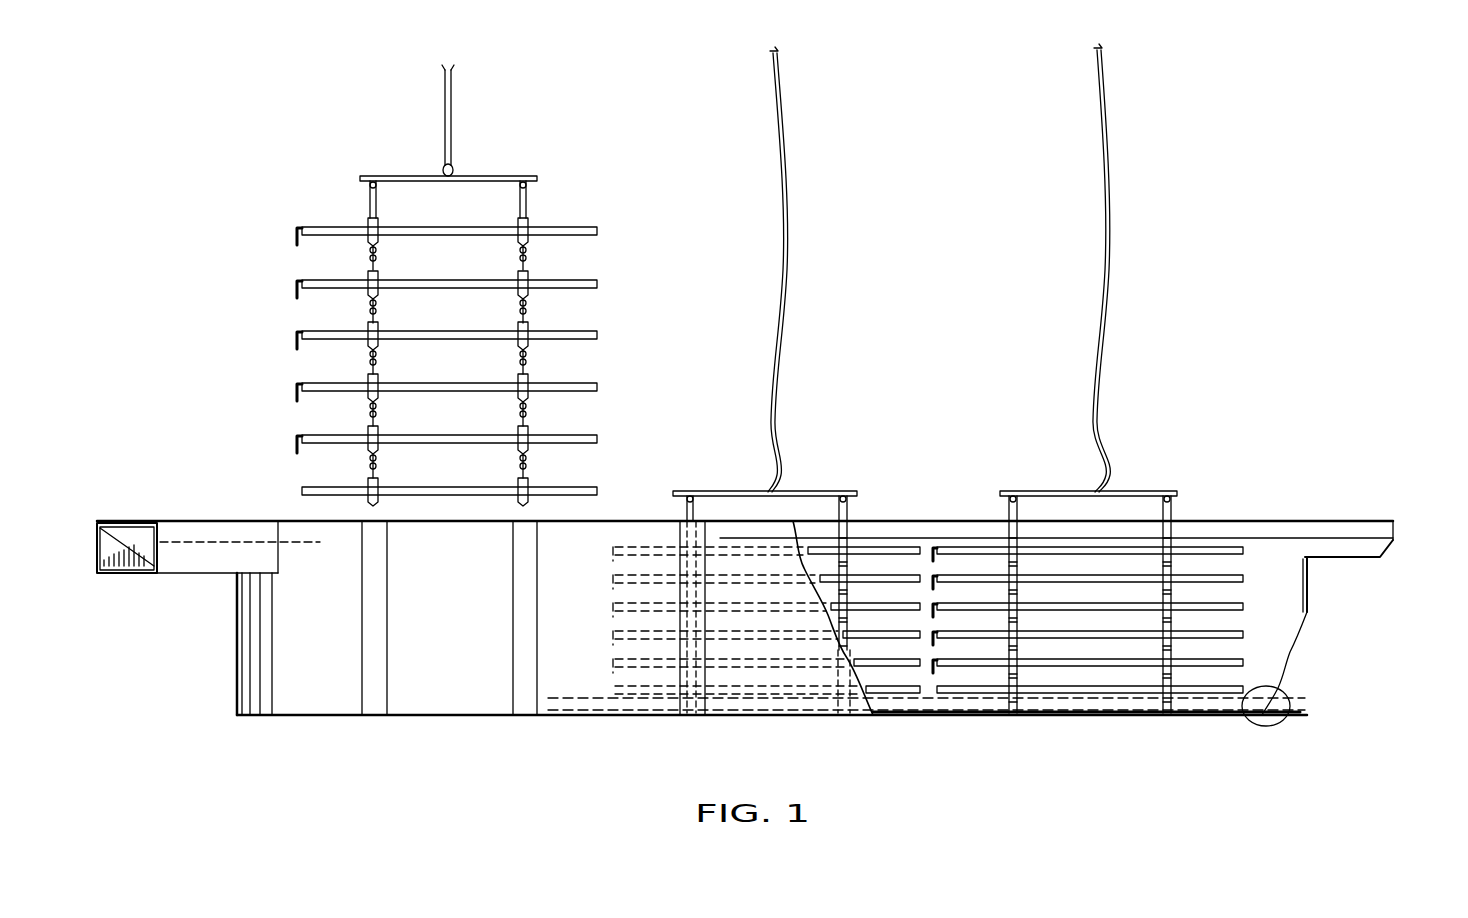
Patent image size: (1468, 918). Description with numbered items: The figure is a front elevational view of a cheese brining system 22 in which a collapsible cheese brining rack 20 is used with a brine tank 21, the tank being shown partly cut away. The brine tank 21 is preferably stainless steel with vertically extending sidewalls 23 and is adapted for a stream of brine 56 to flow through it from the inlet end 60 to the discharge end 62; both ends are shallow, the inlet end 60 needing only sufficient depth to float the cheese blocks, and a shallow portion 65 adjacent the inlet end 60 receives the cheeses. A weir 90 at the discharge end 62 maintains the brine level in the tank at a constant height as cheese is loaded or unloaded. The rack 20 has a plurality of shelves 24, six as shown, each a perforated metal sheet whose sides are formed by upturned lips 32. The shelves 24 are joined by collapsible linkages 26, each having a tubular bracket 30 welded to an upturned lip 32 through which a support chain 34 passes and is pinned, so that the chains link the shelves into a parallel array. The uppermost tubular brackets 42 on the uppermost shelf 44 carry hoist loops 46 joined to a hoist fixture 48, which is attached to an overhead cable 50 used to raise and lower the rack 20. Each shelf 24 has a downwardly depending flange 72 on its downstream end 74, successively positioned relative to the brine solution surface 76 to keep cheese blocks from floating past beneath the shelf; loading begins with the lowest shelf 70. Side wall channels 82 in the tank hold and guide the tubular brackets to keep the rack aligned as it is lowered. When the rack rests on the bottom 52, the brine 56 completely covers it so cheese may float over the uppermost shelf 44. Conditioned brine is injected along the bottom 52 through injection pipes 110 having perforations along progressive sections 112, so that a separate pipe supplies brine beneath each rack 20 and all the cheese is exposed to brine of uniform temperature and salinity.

The collapsible cheese brining rack 20 is at (531, 208).
The brine tank 21 is at (615, 520).
The cheese brining system 22 is at (915, 424).
The sidewalls 23 is at (298, 627).
The shelves 24 is at (600, 227).
The collapsible linkages 26 is at (366, 272).
The tubular bracket 30 is at (381, 222).
The upturned lips 32 is at (438, 227).
The support chain 34 is at (528, 298).
The uppermost tubular brackets 42 is at (366, 220).
The uppermost shelf 44 is at (580, 227).
The hoist loops 46 is at (530, 184).
The hoist fixture 48 is at (422, 174).
The overhead cable 50 is at (452, 102).
The bottom 52 is at (1272, 712).
The brine 56 is at (1262, 535).
The inlet end 60 is at (1309, 576).
The discharge end 62 is at (236, 613).
The shallow portion 65 is at (1393, 543).
The lowest shelf 70 is at (312, 487).
The downwardly depending flange 72 is at (297, 402).
The downstream end 74 is at (300, 441).
The brine solution surface 76 is at (903, 535).
The side wall channels 82 is at (513, 607).
The weir 90 is at (97, 560).
The injection pipes 110 is at (905, 715).
The progressive sections 112 is at (1047, 716).